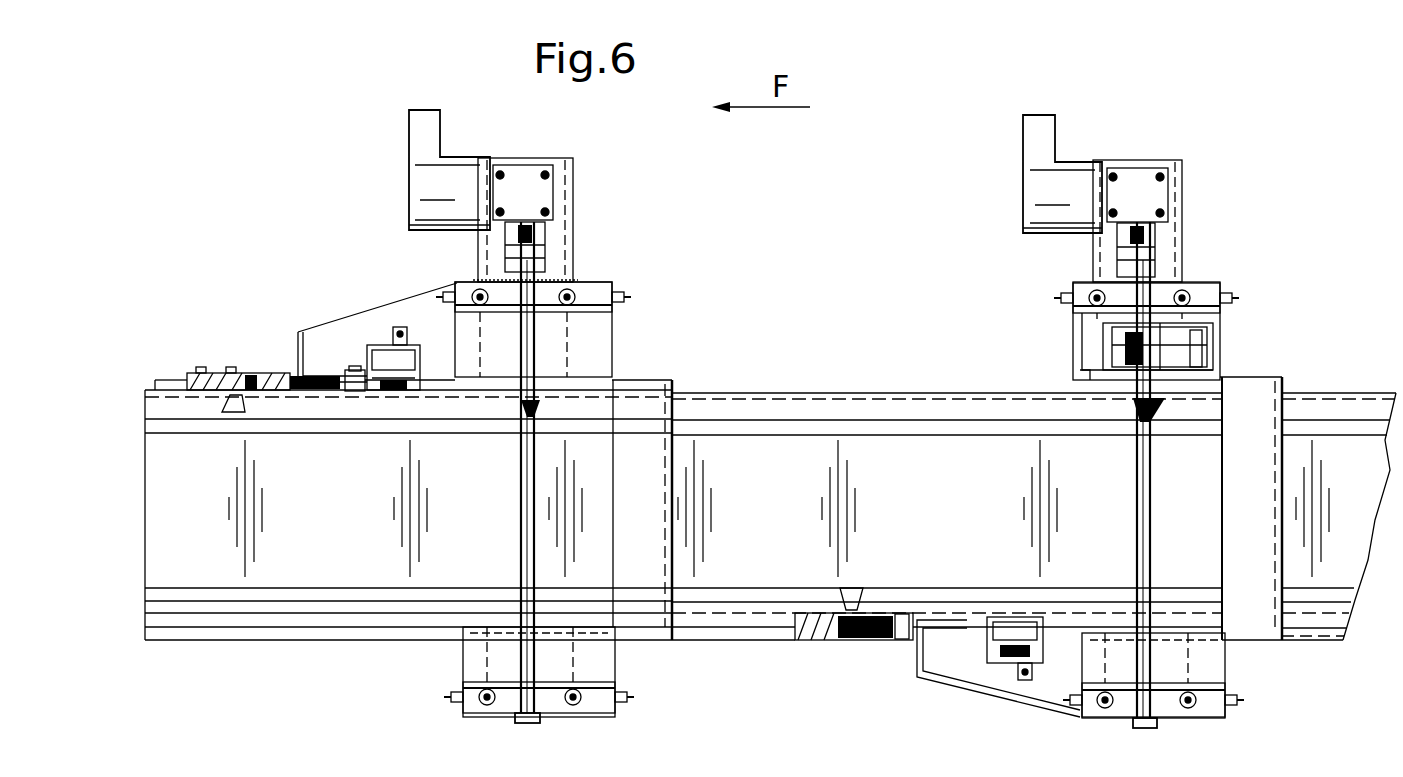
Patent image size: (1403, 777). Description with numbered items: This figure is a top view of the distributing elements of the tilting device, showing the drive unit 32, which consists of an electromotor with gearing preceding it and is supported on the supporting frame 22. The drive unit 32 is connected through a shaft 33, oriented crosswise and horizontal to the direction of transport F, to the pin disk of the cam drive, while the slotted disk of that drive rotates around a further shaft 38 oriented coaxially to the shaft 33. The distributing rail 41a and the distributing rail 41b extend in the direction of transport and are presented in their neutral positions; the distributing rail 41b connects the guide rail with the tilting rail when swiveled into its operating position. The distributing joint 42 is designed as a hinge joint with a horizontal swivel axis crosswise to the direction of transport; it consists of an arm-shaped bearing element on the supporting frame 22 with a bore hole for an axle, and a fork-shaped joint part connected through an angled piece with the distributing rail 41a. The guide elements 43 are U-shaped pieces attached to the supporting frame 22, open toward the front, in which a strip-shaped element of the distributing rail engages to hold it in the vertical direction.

The supporting frame 22 is at (590, 322).
The drive unit 32 is at (445, 173).
The shaft 33 is at (530, 412).
The further shaft 38 is at (395, 325).
The distributing rail 41a is at (806, 408).
The distributing rail 41b is at (1298, 593).
The distributing joint 42 is at (1158, 346).
The guide elements 43 is at (240, 372).